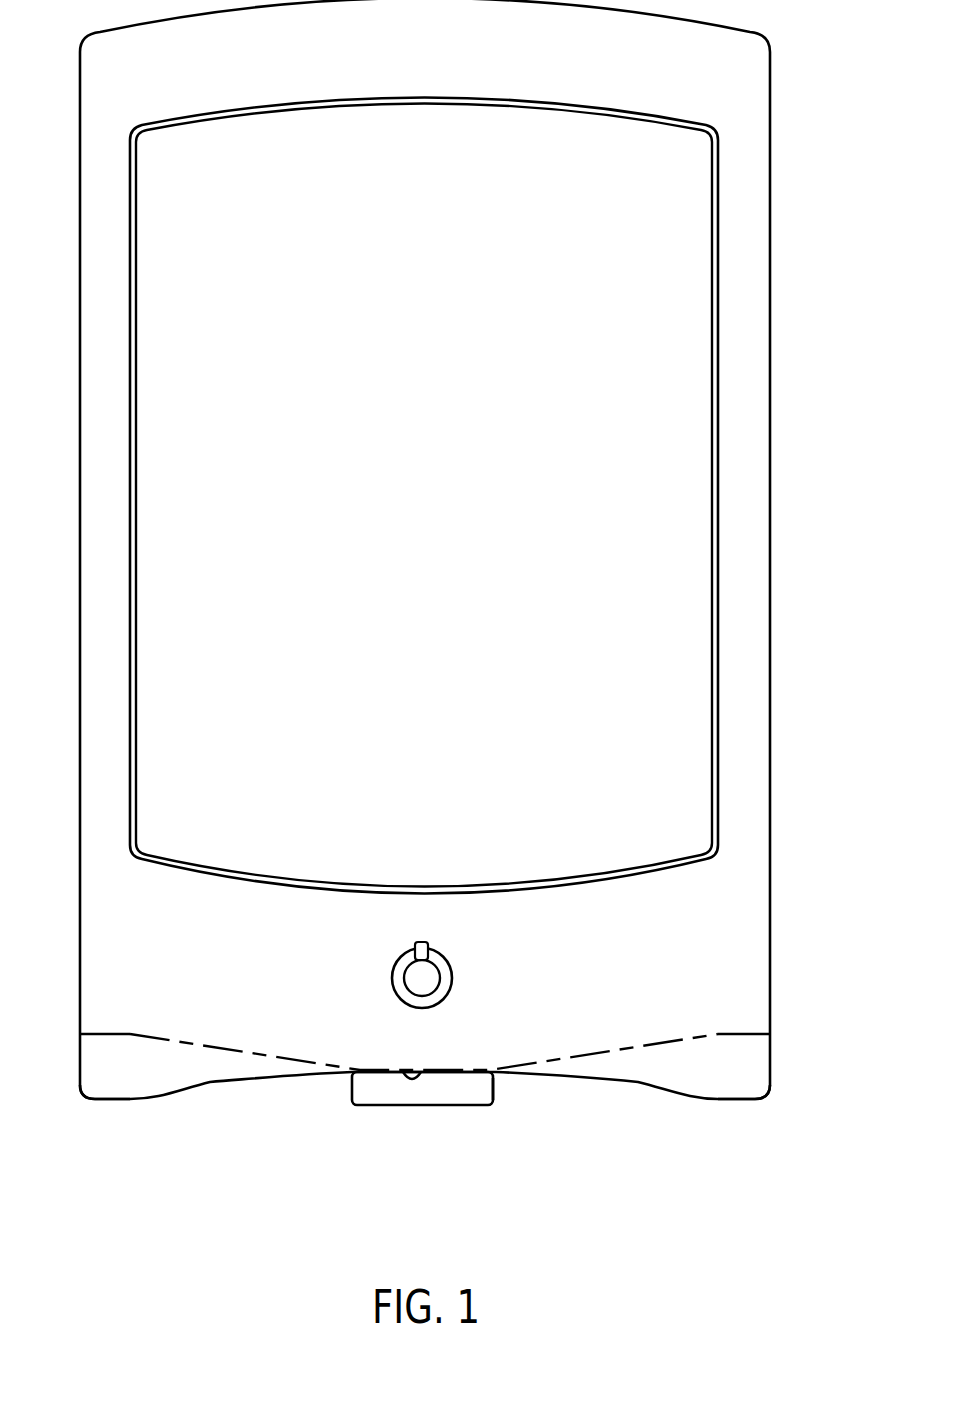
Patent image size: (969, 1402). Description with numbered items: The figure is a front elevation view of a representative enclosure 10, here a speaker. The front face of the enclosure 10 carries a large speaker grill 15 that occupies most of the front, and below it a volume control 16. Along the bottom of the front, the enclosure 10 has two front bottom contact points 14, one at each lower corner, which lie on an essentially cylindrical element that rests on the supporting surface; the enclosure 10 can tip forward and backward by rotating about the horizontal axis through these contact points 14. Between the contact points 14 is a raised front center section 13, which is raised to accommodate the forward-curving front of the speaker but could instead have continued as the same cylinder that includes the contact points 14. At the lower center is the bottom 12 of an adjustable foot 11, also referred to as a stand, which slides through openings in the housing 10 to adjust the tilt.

The enclosure 10 is at (768, 536).
The adjustable foot 11 is at (493, 1087).
The bottom of adjustable foot 12 is at (442, 1105).
The raised front center section 13 is at (420, 1070).
The front bottom contact points 14 is at (95, 1092).
The speaker grill 15 is at (610, 877).
The volume control 16 is at (452, 973).